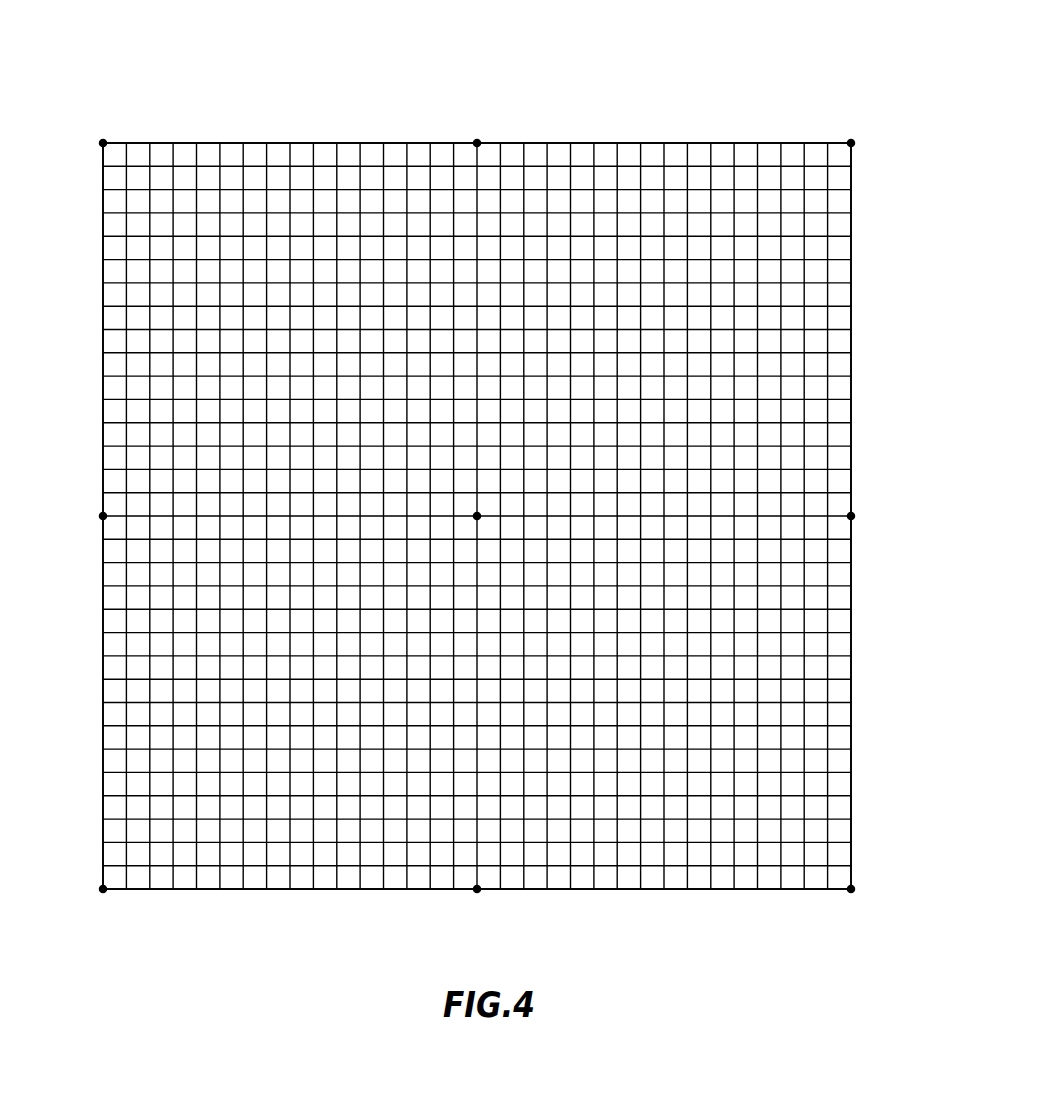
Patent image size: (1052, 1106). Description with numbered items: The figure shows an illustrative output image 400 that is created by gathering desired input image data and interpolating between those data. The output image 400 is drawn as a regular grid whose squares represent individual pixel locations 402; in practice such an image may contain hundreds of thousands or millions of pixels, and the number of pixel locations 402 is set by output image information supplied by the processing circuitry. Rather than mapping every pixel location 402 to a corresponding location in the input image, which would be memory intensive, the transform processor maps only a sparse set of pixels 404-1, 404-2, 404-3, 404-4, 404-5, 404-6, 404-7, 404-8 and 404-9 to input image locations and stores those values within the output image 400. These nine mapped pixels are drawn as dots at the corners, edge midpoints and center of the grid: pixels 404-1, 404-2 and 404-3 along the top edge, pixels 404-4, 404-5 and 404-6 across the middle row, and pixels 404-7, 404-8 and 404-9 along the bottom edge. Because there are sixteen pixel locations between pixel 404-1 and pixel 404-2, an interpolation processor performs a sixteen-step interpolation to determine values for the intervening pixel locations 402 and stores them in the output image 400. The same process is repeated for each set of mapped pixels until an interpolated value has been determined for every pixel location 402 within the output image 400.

The output image 400 is at (698, 73).
The individual pixel locations 402 is at (805, 283).
The pixel 404-1 is at (103, 143).
The pixel 404-2 is at (477, 143).
The pixel 404-3 is at (851, 143).
The pixel 404-4 is at (103, 516).
The pixel 404-5 is at (477, 516).
The pixel 404-6 is at (851, 516).
The pixel 404-7 is at (103, 889).
The pixel 404-8 is at (477, 889).
The pixel 404-9 is at (851, 889).